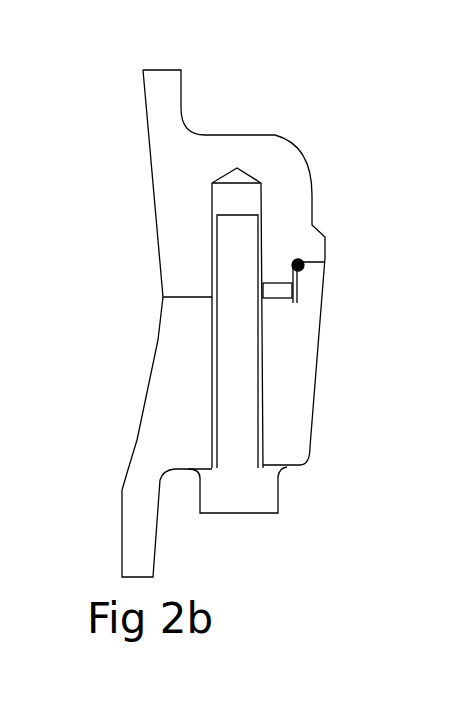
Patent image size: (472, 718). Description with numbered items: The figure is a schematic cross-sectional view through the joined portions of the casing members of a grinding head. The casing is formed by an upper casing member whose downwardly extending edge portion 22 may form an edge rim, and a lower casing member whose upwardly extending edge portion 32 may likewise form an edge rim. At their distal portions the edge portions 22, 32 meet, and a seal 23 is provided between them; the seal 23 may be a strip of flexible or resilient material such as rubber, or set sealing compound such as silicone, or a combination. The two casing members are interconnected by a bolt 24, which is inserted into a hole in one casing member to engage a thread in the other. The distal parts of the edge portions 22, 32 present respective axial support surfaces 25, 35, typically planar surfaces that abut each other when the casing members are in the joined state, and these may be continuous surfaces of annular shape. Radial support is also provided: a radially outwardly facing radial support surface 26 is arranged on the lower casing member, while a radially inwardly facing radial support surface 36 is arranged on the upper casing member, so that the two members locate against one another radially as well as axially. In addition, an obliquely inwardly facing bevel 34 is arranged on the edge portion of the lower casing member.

The downwardly extending edge portion 22 is at (167, 218).
The seal 23 is at (298, 262).
The bolt 24 is at (238, 492).
The axial support surface 25 is at (285, 318).
The radially outwardly facing radial support surface 26 is at (302, 287).
The upwardly extending edge portion 32 is at (150, 424).
The bevel 34 is at (300, 265).
The axial support surface 35 is at (278, 280).
The radially inwardly facing radial support surface 36 is at (285, 292).